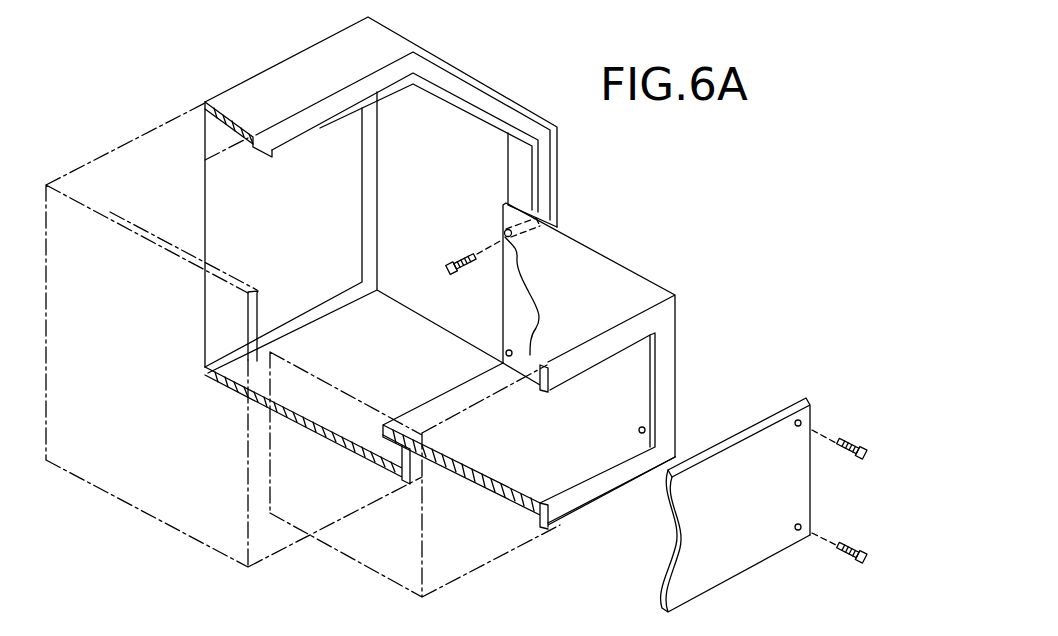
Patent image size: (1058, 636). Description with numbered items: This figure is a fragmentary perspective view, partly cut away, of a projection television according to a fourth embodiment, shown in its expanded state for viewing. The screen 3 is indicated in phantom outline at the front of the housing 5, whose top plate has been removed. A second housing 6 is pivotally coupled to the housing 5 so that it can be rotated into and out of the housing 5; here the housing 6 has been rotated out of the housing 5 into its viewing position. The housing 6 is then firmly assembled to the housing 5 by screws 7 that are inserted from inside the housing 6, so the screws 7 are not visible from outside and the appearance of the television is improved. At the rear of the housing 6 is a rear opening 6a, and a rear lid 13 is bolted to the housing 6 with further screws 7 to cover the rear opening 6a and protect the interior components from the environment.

The screen 3 is at (205, 215).
The housing 5 is at (484, 86).
The housing 6 is at (675, 352).
The rear opening 6a is at (632, 410).
The screw 7 is at (856, 547).
The rear lid 13 is at (793, 397).